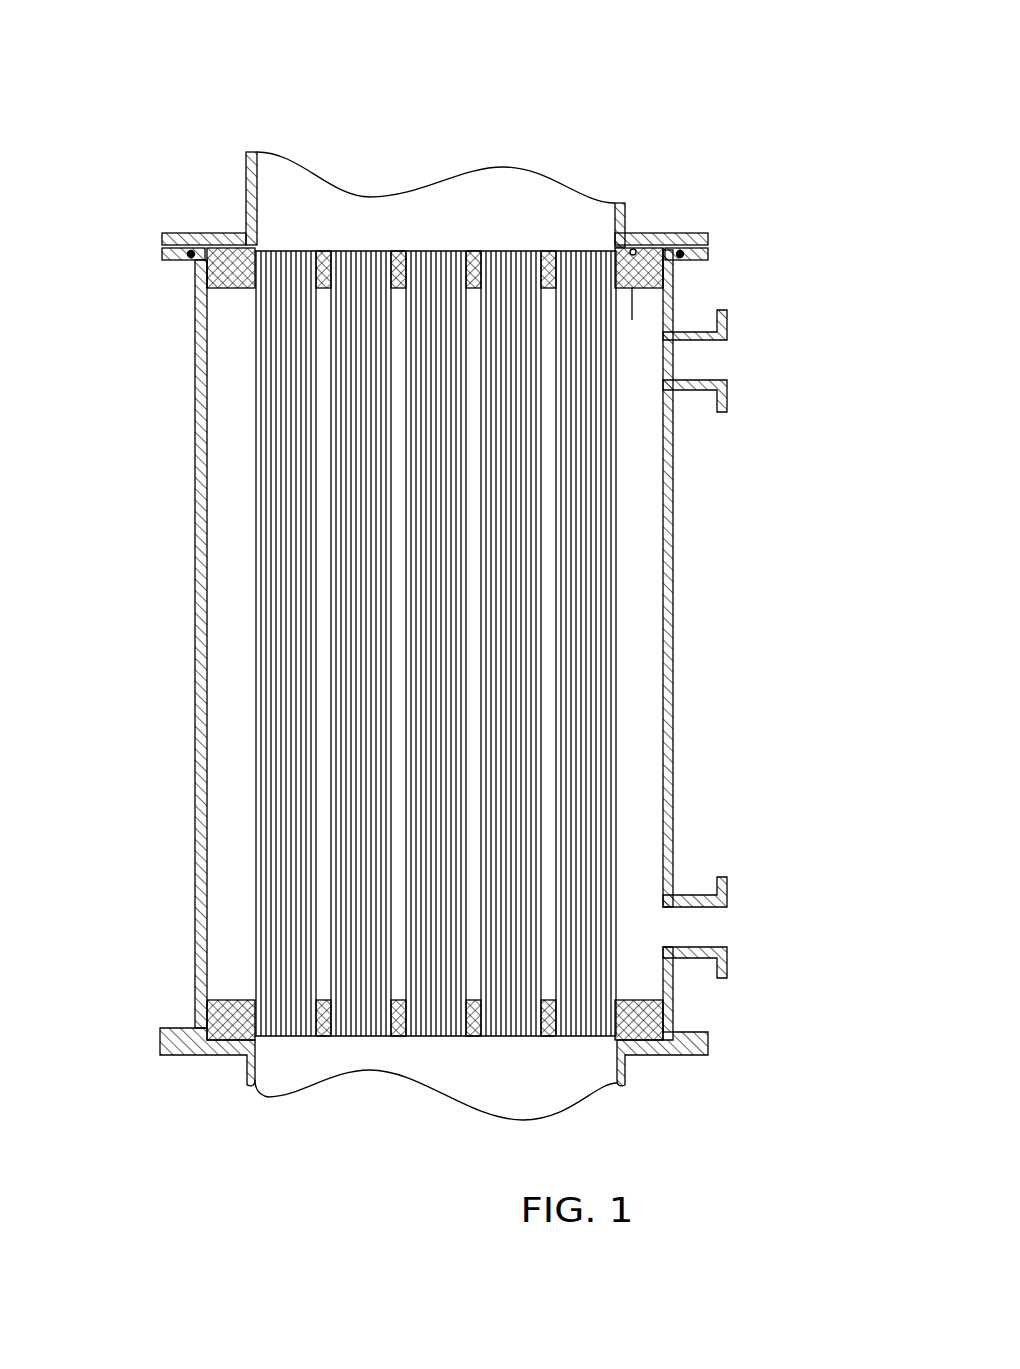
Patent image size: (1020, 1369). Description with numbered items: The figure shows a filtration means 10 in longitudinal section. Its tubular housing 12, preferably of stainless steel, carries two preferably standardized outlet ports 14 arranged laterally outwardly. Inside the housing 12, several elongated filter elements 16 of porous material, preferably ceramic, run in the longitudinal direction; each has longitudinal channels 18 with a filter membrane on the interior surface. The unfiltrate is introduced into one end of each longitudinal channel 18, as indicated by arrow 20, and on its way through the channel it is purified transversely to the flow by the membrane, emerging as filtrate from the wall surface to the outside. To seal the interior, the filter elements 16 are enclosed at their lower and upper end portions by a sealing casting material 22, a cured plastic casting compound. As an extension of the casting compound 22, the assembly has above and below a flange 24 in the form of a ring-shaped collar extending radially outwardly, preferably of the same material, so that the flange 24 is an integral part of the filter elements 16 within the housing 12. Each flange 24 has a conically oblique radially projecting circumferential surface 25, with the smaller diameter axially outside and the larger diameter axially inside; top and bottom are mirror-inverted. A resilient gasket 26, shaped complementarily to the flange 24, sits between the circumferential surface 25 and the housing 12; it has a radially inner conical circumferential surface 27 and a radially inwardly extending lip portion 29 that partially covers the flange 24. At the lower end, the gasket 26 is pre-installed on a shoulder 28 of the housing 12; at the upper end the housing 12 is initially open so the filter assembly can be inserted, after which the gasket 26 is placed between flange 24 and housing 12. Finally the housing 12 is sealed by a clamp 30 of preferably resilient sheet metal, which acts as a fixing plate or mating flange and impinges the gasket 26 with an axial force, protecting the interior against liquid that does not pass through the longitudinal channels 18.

The filtration means 10 is at (543, 63).
The tubular housing 12 is at (197, 525).
The outlet ports 14 is at (732, 360).
The filter elements 16 is at (580, 1048).
The longitudinal channels 18 is at (298, 343).
The arrow 20 is at (428, 252).
The sealing casting material 22 is at (322, 255).
The flange 24 is at (233, 267).
The circumferential surface 25 is at (663, 287).
The resilient gasket 26 is at (665, 272).
The circumferential surface 27 is at (622, 995).
The shoulder 28 is at (225, 1045).
The lip portion 29 is at (634, 250).
The clamp 30 is at (237, 240).